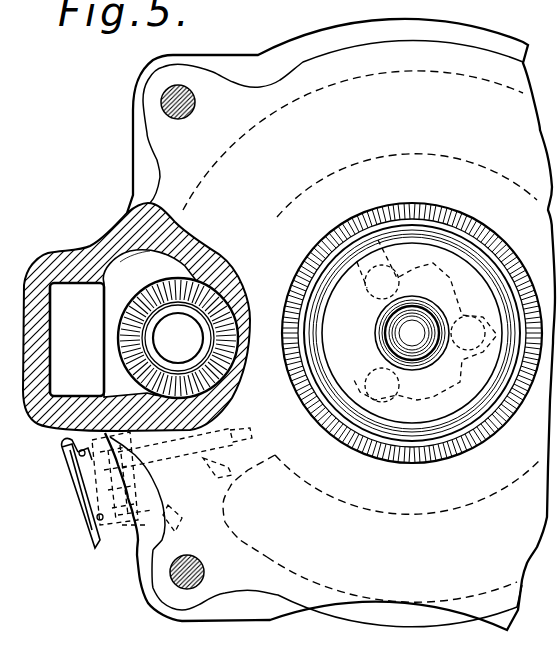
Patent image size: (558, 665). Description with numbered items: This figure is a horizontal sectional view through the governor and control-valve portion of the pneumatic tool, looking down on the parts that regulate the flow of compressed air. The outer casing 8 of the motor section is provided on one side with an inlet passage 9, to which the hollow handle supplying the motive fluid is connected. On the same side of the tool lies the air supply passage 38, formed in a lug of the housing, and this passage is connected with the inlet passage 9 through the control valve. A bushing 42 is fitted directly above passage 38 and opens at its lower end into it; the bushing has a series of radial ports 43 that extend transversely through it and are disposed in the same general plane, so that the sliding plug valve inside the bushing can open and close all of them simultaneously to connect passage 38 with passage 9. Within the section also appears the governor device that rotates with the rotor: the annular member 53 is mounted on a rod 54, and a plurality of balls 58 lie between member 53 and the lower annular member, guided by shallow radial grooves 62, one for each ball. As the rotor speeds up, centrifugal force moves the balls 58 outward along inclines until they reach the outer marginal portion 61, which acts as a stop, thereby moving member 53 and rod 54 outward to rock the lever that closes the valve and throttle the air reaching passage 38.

The outer casing 8 is at (32, 414).
The inlet passage 9 is at (77, 339).
The air supply passage 38 is at (247, 269).
The bushing 42 is at (130, 290).
The radial ports 43 is at (182, 330).
The annular member 53 is at (415, 410).
The rod 54 is at (396, 335).
The balls 58 is at (392, 281).
The outer marginal portion 61 is at (415, 214).
The shallow radial grooves 62 is at (425, 322).